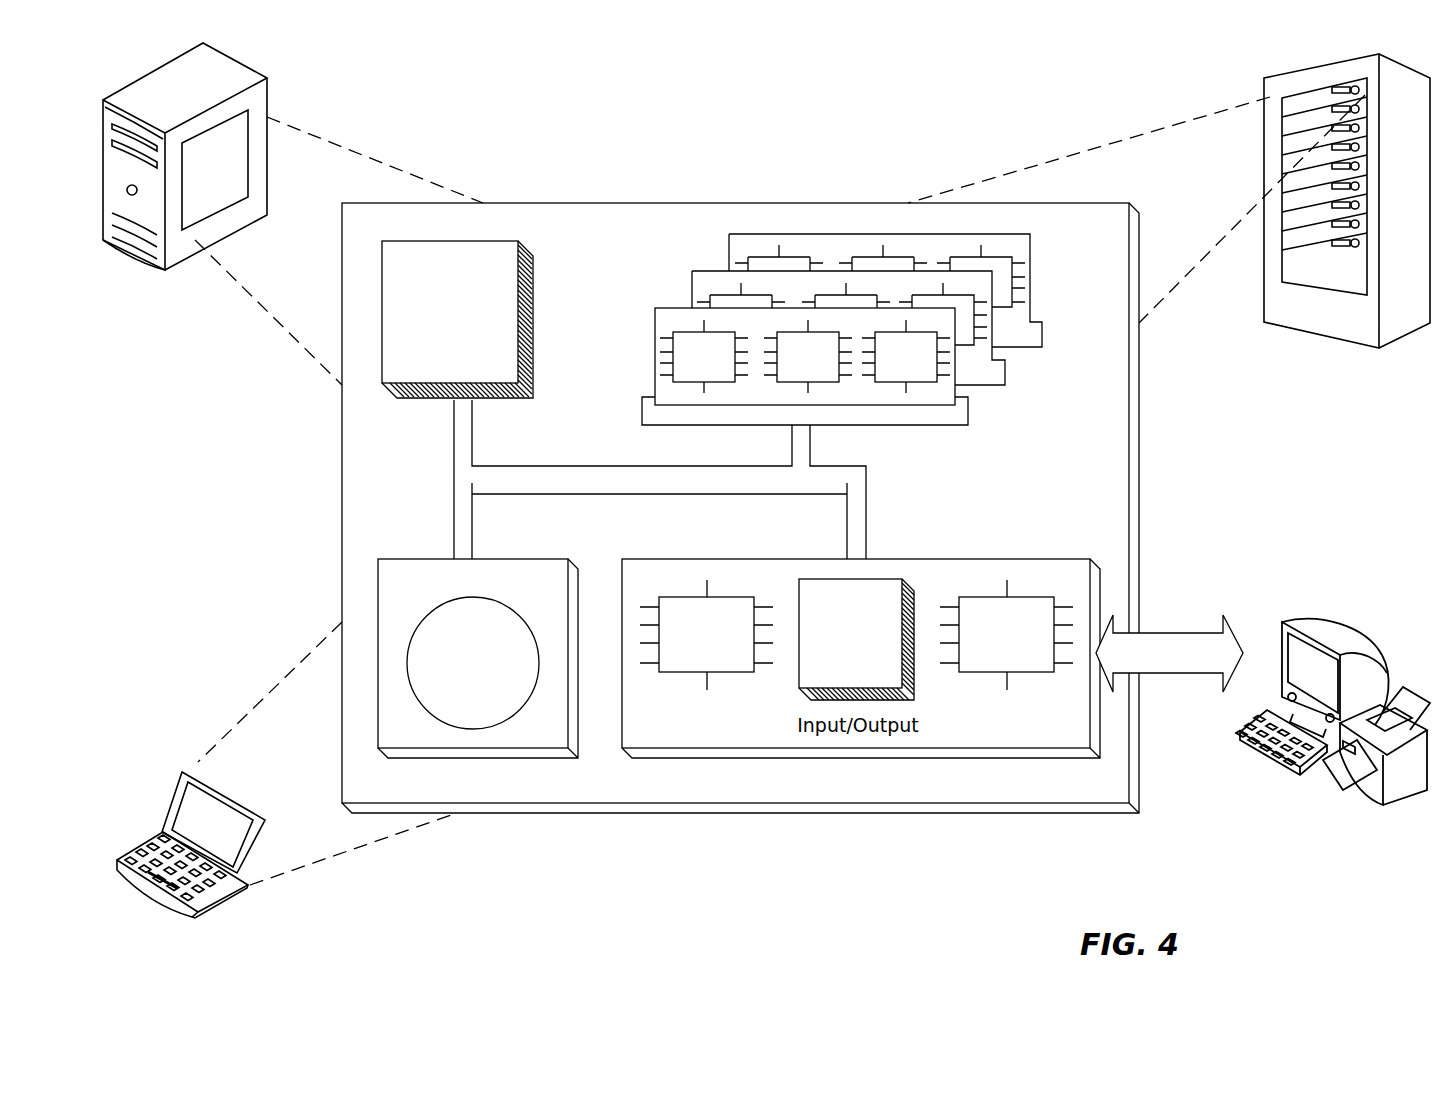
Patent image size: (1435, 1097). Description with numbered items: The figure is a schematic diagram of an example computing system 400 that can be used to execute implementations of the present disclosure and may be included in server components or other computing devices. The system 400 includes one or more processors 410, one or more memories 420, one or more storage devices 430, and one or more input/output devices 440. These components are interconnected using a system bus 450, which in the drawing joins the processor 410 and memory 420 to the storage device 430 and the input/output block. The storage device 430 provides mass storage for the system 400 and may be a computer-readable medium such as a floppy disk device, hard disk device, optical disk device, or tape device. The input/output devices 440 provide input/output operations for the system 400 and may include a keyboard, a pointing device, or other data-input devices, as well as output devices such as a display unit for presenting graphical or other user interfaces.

The computing system 400 is at (546, 99).
The processor 410 is at (510, 376).
The memory 420 is at (1037, 384).
The storage device 430 is at (523, 739).
The input/output device 440 is at (1278, 628).
The system bus 450 is at (655, 485).